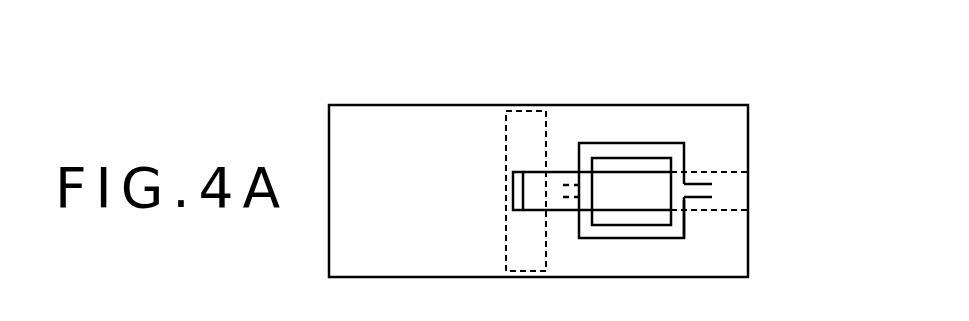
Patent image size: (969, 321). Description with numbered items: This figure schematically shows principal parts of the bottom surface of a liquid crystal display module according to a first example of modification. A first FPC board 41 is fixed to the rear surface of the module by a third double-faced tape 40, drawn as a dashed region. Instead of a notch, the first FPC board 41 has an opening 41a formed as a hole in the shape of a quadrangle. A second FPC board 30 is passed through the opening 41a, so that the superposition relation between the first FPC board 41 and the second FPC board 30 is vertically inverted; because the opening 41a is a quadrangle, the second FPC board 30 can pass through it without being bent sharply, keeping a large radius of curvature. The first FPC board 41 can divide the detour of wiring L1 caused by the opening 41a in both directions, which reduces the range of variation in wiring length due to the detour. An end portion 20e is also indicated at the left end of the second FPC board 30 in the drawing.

The end portion of substrate 20e is at (518, 192).
The second FPC board 30 is at (633, 193).
The third double-faced tape 40 is at (524, 130).
The first FPC board 41 is at (718, 207).
The opening 41a is at (643, 218).
The wiring L1 is at (684, 225).